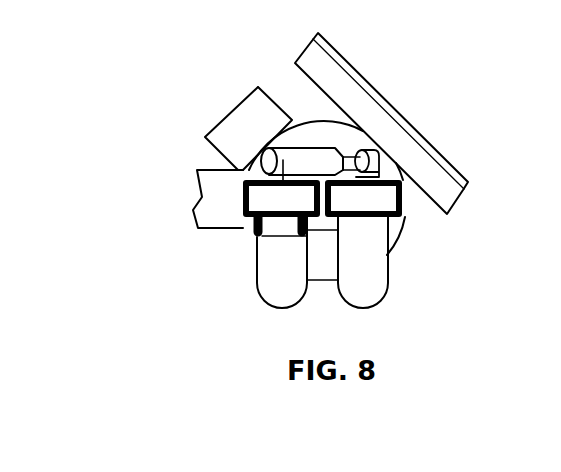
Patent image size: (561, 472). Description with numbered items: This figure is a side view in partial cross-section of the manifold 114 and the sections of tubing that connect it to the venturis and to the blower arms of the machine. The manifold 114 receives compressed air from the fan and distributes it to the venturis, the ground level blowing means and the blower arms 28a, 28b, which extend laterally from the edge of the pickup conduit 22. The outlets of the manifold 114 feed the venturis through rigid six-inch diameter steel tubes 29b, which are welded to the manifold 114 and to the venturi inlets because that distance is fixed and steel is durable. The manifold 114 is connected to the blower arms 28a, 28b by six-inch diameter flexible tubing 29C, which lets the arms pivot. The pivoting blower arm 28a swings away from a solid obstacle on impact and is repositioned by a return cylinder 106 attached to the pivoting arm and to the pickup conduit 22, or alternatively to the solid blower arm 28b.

The pickup conduit 22 is at (390, 102).
The return cylinder 106 is at (285, 145).
The manifold 114 is at (315, 120).
The rigid steel tubes 29b is at (235, 160).
The pivoting blower arm 28a is at (252, 221).
The solid blower arm 28b is at (402, 216).
The flexible tubing 29C is at (285, 290).